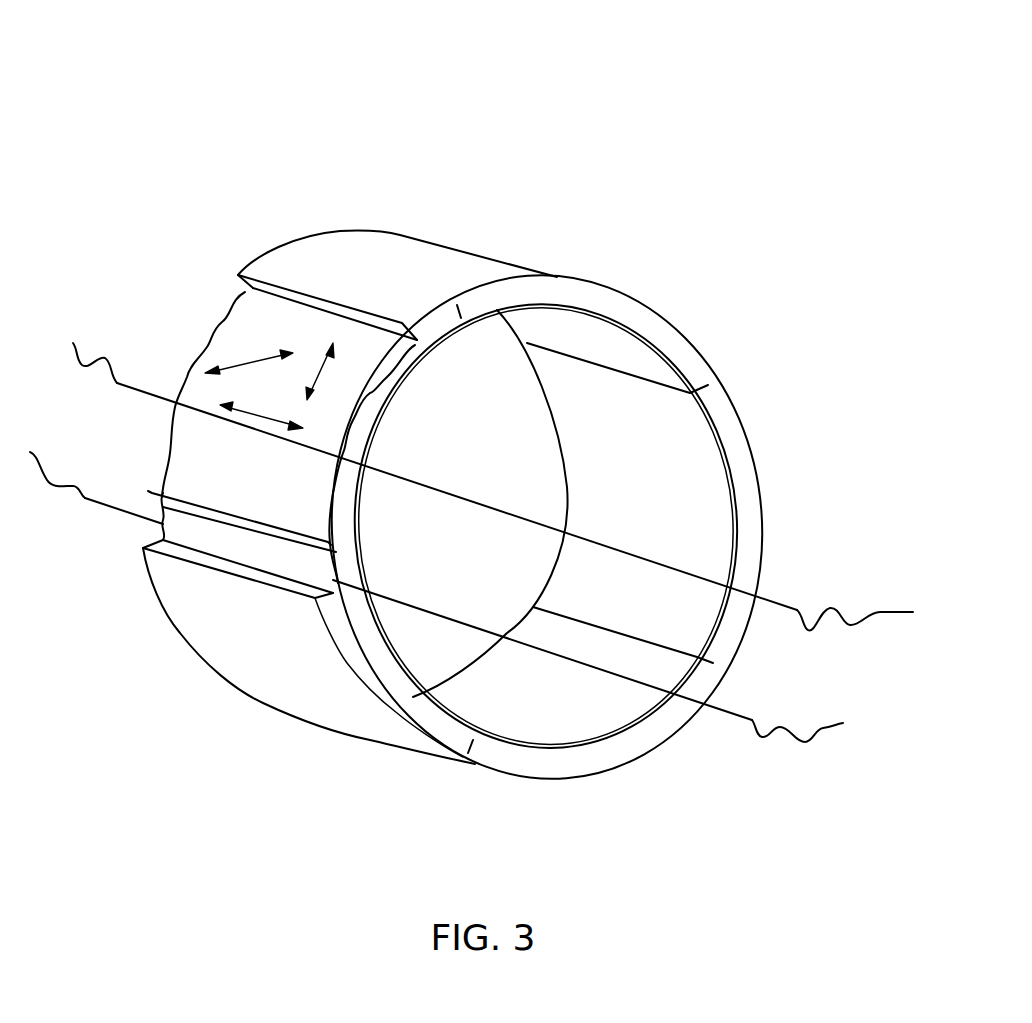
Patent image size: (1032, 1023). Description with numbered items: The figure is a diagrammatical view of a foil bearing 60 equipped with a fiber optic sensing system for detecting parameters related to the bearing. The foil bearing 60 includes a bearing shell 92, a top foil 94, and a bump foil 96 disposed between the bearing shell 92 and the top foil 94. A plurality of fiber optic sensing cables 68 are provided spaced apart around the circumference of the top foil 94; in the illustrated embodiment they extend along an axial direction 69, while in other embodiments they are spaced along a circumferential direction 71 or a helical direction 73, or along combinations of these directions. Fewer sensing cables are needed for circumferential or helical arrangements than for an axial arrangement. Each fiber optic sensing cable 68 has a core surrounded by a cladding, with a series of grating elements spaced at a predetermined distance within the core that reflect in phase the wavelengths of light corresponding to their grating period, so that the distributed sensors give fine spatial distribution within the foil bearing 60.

The foil bearing 60 is at (752, 83).
The fiber optic sensing cable 68 is at (117, 385).
The axial direction 69 is at (260, 420).
The circumferential direction 71 is at (323, 371).
The helical direction 73 is at (243, 366).
The bearing shell 92 is at (447, 250).
The top foil 94 is at (716, 470).
The bump foil 96 is at (220, 326).